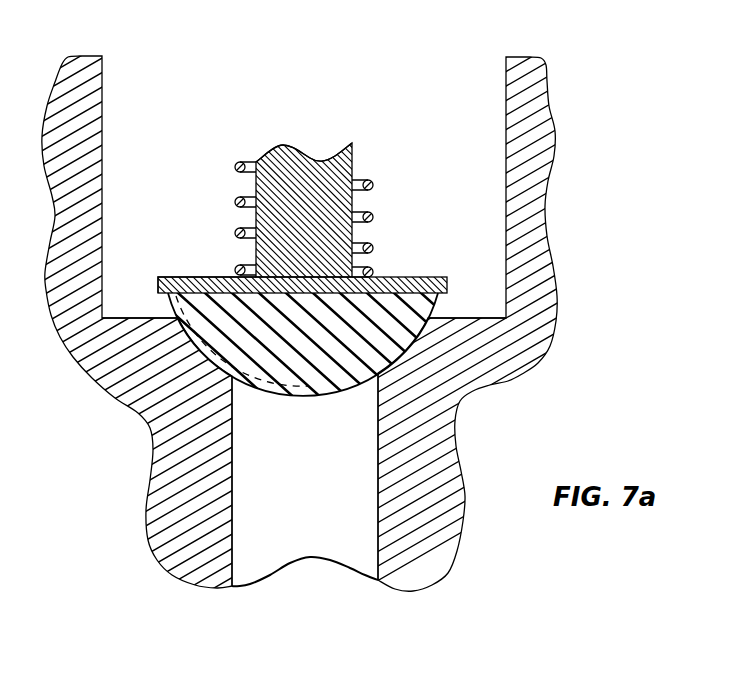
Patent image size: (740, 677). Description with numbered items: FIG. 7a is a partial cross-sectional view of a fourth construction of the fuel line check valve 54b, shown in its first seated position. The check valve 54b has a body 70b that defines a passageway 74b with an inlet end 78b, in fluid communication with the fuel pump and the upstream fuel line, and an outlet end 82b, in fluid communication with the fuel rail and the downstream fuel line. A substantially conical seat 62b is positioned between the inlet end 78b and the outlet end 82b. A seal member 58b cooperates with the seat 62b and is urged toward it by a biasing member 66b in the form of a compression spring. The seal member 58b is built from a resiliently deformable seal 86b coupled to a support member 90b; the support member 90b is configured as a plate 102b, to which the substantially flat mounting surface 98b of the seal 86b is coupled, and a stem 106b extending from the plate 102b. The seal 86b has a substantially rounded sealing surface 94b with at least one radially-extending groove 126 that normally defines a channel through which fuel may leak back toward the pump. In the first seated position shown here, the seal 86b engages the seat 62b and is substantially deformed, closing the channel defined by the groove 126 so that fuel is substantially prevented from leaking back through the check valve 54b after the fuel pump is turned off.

The check valve 54b is at (599, 77).
The seal member 58b is at (447, 175).
The conical seat 62b is at (400, 357).
The biasing member 66b is at (238, 166).
The body 70b is at (530, 267).
The passageway 74b is at (507, 203).
The inlet end 78b is at (378, 556).
The outlet end 82b is at (102, 108).
The seal 86b is at (298, 370).
The support member 90b is at (355, 233).
The sealing surface 94b is at (318, 393).
The mounting surface 98b is at (393, 293).
The plate 102b is at (196, 278).
The stem 106b is at (353, 163).
The groove 126 is at (257, 403).